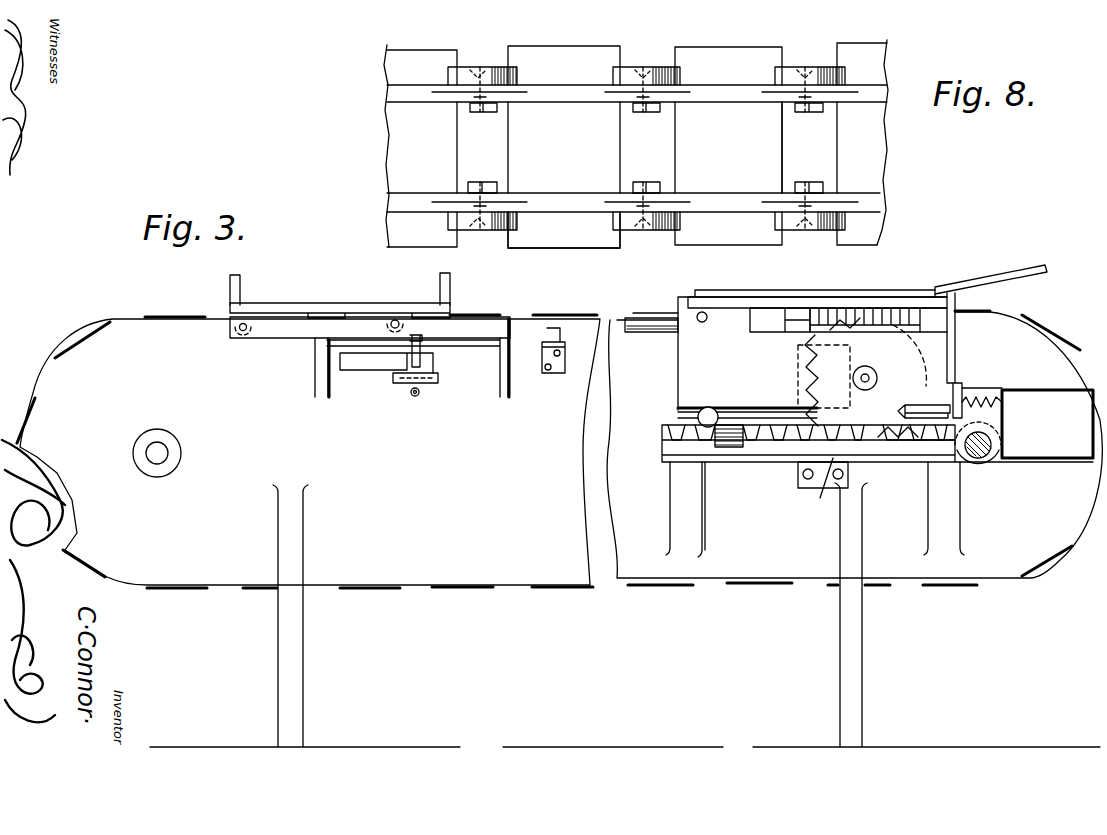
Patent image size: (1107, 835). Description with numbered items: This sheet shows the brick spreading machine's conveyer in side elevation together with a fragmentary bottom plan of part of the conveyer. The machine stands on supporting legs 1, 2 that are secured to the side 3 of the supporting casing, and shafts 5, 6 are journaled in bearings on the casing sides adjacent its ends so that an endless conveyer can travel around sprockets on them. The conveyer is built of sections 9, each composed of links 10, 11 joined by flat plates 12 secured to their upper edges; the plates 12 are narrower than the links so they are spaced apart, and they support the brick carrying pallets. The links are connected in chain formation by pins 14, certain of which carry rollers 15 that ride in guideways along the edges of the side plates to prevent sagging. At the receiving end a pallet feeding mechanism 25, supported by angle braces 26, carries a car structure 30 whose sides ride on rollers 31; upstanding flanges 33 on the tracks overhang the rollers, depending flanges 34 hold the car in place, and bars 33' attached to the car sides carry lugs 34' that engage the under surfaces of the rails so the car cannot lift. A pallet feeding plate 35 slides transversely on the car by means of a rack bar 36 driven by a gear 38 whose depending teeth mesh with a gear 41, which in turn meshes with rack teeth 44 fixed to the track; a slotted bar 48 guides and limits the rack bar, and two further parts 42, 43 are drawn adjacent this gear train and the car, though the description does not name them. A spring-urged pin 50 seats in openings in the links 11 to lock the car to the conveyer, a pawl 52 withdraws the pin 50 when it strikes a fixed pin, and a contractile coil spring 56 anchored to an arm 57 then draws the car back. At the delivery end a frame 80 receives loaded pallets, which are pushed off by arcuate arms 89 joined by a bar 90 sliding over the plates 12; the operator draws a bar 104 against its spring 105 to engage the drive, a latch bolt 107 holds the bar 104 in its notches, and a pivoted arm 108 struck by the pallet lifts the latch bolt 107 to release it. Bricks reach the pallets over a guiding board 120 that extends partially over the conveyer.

In FIG. 3, the supporting leg 1 is at (293, 655).
In FIG. 3, the supporting leg 2 is at (855, 673).
In FIG. 3, the side of supporting casing 3 is at (517, 562).
In FIG. 3, the shaft 5 is at (167, 453).
In FIG. 3, the shaft 6 is at (985, 458).
In FIG. 8, the section 9 is at (770, 173).
In FIG. 3, the section 9 is at (1032, 578).
In FIG. 8, the link 10 is at (555, 90).
In FIG. 8, the link 11 is at (572, 207).
In FIG. 8, the flat plate 12 is at (618, 145).
In FIG. 3, the flat plate 12 is at (172, 315).
In FIG. 8, the pin 14 is at (633, 183).
In FIG. 8, the roller 15 is at (503, 67).
In FIG. 3, the pallet feeding mechanism 25 is at (680, 454).
In FIG. 3, the angle brace 26 is at (678, 502).
In FIG. 3, the car structure 30 is at (695, 355).
In FIG. 3, the wheel or roller 31 is at (678, 412).
In FIG. 3, the upstanding flange 33 is at (729, 455).
In FIG. 3, the bar 33' is at (807, 486).
In FIG. 3, the flange 34 is at (747, 393).
In FIG. 3, the roller or lug 34' is at (819, 487).
In FIG. 3, the pallet feeding plate 35 is at (778, 302).
In FIG. 3, the rack bar 36 is at (800, 315).
In FIG. 3, the gear 38 is at (883, 313).
In FIG. 3, the gear 41 is at (832, 372).
In FIG. 3, the ratchet wheel 42 is at (875, 377).
In FIG. 3, the hanger 43 is at (713, 442).
In FIG. 3, the rack teeth 44 is at (913, 450).
In FIG. 3, the bar 48 is at (792, 327).
In FIG. 3, the pin 50 is at (697, 313).
In FIG. 3, the pawl 52 is at (650, 326).
In FIG. 3, the contractile coil spring 56 is at (1000, 397).
In FIG. 3, the arm 57 is at (1065, 447).
In FIG. 3, the frame 80 is at (275, 332).
In FIG. 3, the arcuate arm 89 is at (240, 292).
In FIG. 3, the bar 90 is at (335, 303).
In FIG. 3, the bar 104 is at (430, 387).
In FIG. 3, the contractile spring 105 is at (415, 397).
In FIG. 3, the latch bolt 107 is at (433, 367).
In FIG. 3, the pivoted arm 108 is at (410, 352).
In FIG. 3, the guiding board or plate 120 is at (965, 280).